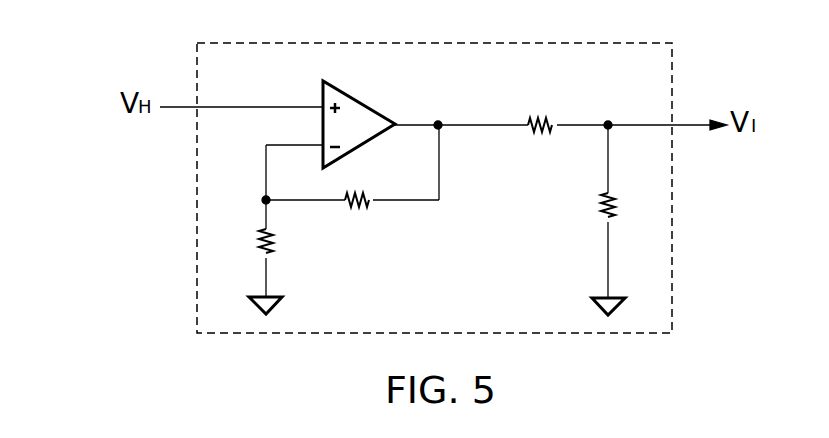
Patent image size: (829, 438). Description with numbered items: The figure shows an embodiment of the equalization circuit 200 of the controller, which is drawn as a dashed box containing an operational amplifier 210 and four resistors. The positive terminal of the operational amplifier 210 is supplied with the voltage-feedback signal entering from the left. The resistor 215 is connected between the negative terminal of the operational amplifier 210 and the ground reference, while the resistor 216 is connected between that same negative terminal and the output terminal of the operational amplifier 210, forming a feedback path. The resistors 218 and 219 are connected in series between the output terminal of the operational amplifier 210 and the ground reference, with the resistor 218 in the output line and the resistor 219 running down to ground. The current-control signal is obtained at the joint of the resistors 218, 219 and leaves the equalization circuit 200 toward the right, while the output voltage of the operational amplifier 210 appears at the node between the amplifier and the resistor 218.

The equalization circuit 200 is at (612, 43).
The operational amplifier 210 is at (358, 98).
The resistor 215 is at (250, 247).
The resistor 216 is at (357, 214).
The resistor 218 is at (545, 113).
The resistor 219 is at (620, 208).